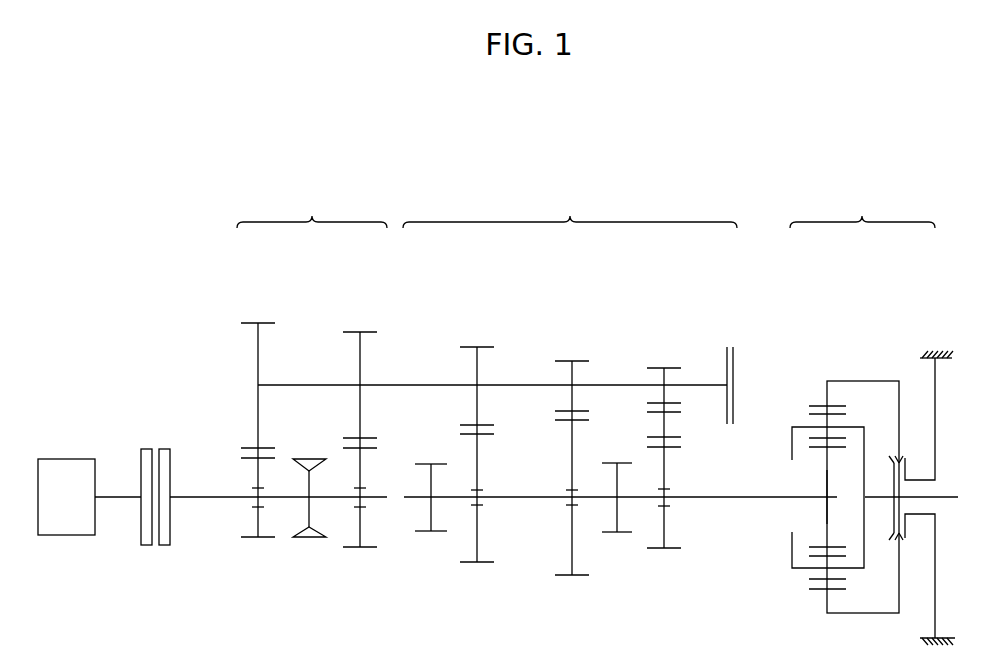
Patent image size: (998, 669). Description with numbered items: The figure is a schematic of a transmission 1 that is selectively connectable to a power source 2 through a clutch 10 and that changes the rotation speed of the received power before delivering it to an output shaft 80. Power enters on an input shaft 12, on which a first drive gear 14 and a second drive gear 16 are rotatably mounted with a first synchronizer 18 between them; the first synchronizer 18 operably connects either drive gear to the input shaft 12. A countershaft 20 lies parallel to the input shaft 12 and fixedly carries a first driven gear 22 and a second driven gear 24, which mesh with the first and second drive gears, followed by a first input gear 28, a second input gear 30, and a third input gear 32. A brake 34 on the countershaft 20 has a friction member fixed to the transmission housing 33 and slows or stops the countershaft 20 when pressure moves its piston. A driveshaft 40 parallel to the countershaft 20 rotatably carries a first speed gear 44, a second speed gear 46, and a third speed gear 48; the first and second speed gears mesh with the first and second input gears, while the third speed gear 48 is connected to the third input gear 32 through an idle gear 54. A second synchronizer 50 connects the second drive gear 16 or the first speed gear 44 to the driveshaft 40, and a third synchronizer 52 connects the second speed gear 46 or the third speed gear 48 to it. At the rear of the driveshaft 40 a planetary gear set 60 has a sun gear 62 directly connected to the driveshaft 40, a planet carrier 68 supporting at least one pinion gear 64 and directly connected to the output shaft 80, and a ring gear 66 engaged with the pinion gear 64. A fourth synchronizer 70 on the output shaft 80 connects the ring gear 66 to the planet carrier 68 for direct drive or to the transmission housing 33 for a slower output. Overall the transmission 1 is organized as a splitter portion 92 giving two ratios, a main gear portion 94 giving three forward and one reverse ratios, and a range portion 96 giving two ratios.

The transmission 1 is at (433, 147).
The power source 2 is at (55, 459).
The clutch 10 is at (151, 430).
The input shaft 12 is at (205, 499).
The first drive gear 14 is at (253, 560).
The second drive gear 16 is at (358, 567).
The first synchronizer 18 is at (307, 557).
The countershaft 20 is at (424, 383).
The first driven gear 22 is at (258, 309).
The second driven gear 24 is at (360, 318).
The first input gear 28 is at (477, 334).
The second input gear 30 is at (572, 347).
The third input gear 32 is at (664, 354).
The transmission housing 33 is at (953, 336).
The brake 34 is at (728, 333).
The driveshaft 40 is at (526, 499).
The first speed gear 44 is at (476, 578).
The second speed gear 46 is at (571, 590).
The third speed gear 48 is at (663, 565).
The second synchronizer 50 is at (430, 548).
The third synchronizer 52 is at (616, 547).
The idle gear 54 is at (702, 440).
The planetary gear set 60 is at (831, 499).
The sun gear 62 is at (826, 489).
The pinion gear 64 is at (824, 421).
The ring gear 66 is at (827, 393).
The planet carrier 68 is at (859, 572).
The fourth synchronizer 70 is at (915, 435).
The output shaft 80 is at (948, 500).
The splitter portion 92 is at (311, 407).
The main gear portion 94 is at (577, 419).
The range portion 96 is at (870, 429).